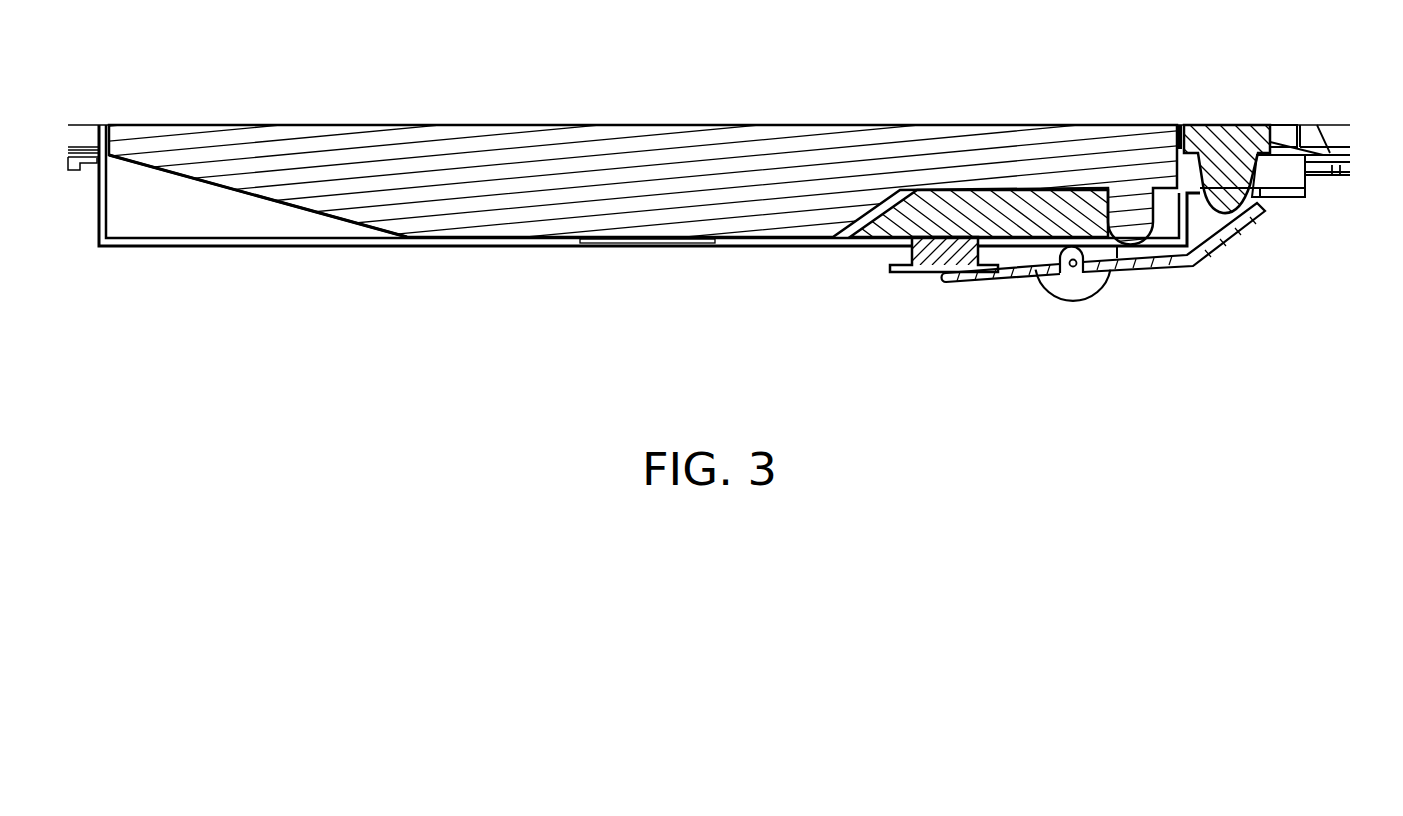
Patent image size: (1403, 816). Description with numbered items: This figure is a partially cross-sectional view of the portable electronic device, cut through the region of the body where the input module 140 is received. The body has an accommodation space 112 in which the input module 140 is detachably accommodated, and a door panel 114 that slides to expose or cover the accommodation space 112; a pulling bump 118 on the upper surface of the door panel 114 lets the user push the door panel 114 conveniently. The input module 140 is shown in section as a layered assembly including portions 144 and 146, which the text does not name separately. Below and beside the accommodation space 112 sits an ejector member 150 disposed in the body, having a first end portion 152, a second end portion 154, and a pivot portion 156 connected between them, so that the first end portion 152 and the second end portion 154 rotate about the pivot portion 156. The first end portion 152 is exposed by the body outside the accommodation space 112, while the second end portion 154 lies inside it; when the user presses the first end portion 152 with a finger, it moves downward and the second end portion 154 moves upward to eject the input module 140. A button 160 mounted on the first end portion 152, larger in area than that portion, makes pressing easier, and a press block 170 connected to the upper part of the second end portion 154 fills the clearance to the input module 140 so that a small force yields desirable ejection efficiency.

The accommodation space 112 is at (118, 206).
The door panel 114 is at (1340, 153).
The pulling bump 118 is at (1283, 134).
The input module 140 is at (641, 182).
The first panel 144 is at (1013, 150).
The second panel 146 is at (1070, 213).
The ejector member 150 is at (1104, 318).
The first end portion 152 is at (1218, 247).
The second end portion 154 is at (993, 279).
The pivot portion 156 is at (1075, 274).
The button 160 is at (1220, 124).
The press block 170 is at (933, 268).